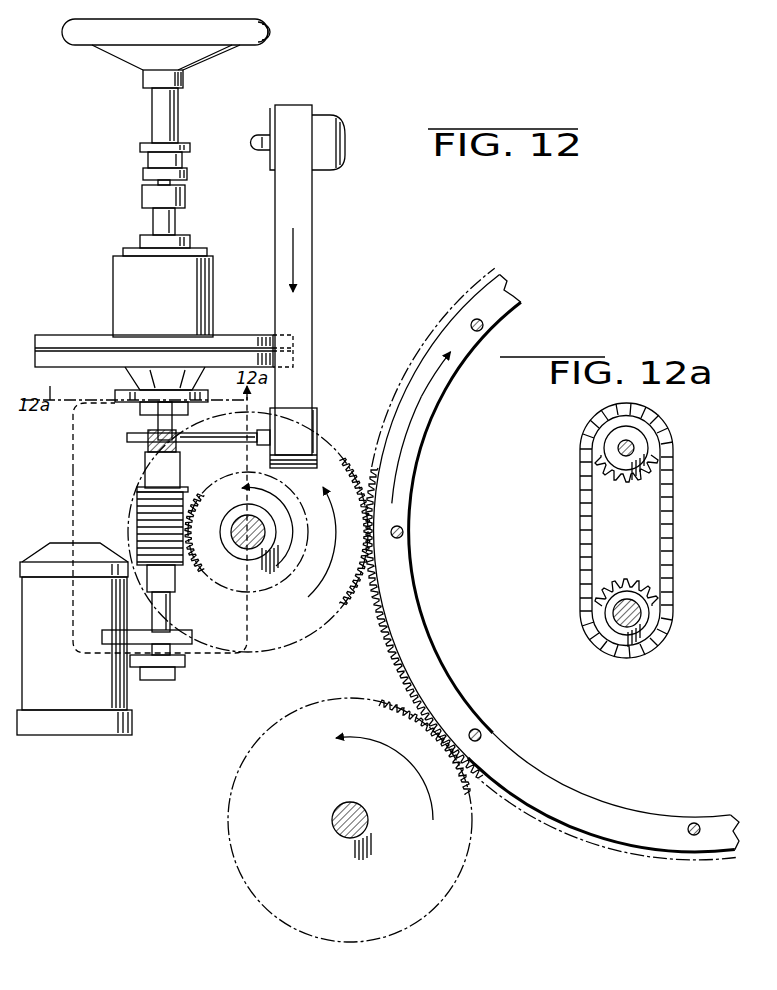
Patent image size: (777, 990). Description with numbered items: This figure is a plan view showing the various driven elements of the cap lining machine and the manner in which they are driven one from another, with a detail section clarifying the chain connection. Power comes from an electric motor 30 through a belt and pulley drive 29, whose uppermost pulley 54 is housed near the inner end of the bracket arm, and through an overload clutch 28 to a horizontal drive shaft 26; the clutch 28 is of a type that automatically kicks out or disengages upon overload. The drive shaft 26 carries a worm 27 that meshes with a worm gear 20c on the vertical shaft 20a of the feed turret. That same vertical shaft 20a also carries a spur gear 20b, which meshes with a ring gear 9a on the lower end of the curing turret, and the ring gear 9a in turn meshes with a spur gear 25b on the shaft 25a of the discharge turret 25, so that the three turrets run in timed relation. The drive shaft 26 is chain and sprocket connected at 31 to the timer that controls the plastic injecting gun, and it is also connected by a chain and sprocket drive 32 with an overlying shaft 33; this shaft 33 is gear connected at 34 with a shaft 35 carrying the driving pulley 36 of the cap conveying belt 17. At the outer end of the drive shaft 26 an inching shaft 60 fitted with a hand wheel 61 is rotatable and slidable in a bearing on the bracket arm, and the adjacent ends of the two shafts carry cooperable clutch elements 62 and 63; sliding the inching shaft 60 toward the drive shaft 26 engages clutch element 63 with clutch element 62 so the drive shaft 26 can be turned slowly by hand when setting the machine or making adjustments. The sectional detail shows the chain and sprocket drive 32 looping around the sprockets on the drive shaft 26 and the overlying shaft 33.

In FIG. 12, the hand wheel 61 is at (100, 37).
In FIG. 12, the inching shaft 60 is at (160, 113).
In FIG. 12, the clutch element 63 is at (145, 173).
In FIG. 12, the clutch element 62 is at (142, 193).
In FIG. 12, the drive shaft 26 is at (158, 218).
In FIG. 12A, the drive shaft 26 is at (641, 610).
In FIG. 12, the clutch 28 is at (110, 285).
In FIG. 12, the belt and pulley drive 29 is at (68, 333).
In FIG. 12, the pulley 54 is at (258, 320).
In FIG. 12, the chain and sprocket drive 32 is at (120, 392).
In FIG. 12A, the chain and sprocket drive 32 is at (677, 516).
In FIG. 12, the shaft 33 is at (160, 422).
In FIG. 12A, the shaft 33 is at (650, 446).
In FIG. 12, the gear connection 34 is at (146, 446).
In FIG. 12, the shaft 35 is at (233, 443).
In FIG. 12, the driving pulley 36 is at (317, 425).
In FIG. 12, the electric motor 30 is at (75, 471).
In FIG. 12, the worm 27 is at (140, 521).
In FIG. 12, the chain and sprocket connection 31 is at (112, 650).
In FIG. 12, the discharge turret 25 is at (108, 738).
In FIG. 12, the shaft 25a is at (352, 840).
In FIG. 12, the spur gear 25b is at (458, 797).
In FIG. 12, the vertical shaft 20a is at (252, 542).
In FIG. 12, the spur gear 20b is at (333, 603).
In FIG. 12, the worm gear 20c is at (217, 562).
In FIG. 12, the cap conveying belt 17 is at (312, 286).
In FIG. 12, the ring gear 9a is at (407, 650).